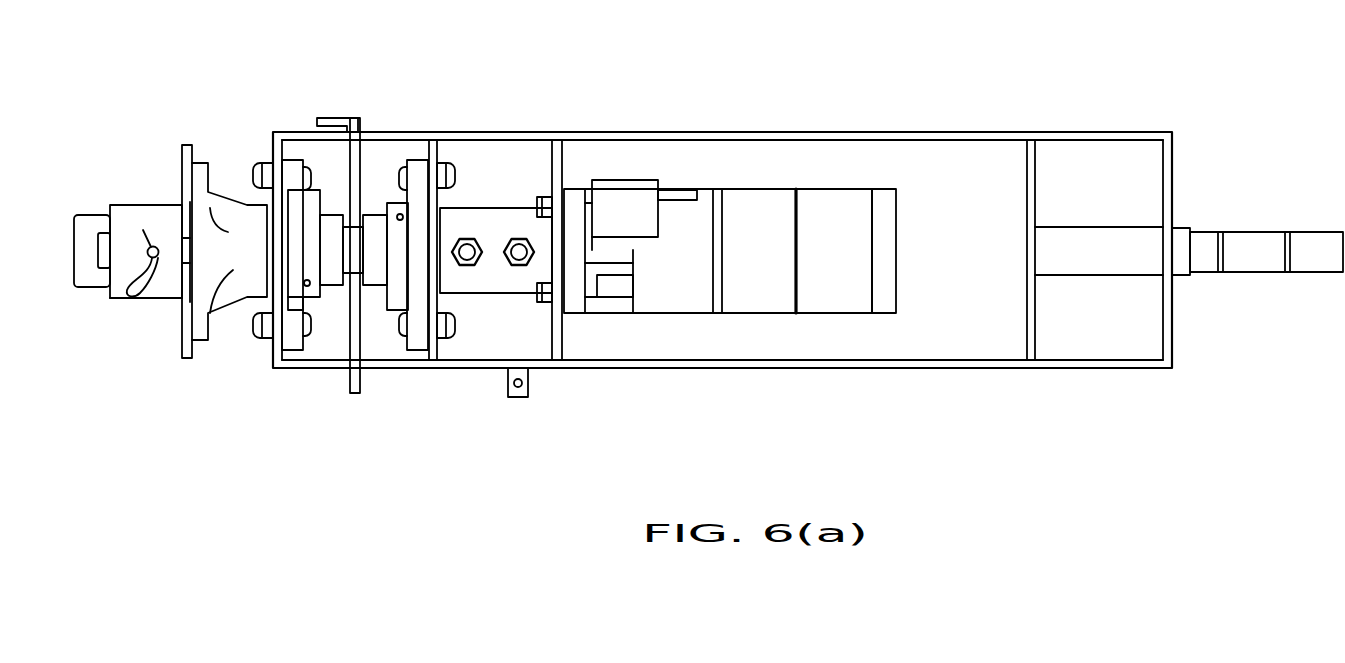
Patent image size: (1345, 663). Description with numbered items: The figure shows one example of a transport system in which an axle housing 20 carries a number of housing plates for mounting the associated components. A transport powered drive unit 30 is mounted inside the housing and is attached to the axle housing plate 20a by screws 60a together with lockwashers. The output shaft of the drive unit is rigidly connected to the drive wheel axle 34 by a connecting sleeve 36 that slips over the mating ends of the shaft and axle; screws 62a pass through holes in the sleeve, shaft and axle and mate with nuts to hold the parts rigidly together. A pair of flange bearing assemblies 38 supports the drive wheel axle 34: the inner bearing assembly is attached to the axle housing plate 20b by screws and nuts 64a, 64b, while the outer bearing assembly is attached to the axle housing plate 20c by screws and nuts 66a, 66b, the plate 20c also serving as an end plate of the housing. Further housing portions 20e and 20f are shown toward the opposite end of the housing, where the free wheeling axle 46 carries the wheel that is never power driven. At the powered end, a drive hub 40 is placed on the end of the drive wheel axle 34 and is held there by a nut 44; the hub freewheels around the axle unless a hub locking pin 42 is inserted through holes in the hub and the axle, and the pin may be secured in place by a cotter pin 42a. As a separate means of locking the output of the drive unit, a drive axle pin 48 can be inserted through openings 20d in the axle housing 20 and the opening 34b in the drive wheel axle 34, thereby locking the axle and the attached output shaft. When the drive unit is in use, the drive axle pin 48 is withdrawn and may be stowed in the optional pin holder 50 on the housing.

The axle housing 20 is at (733, 137).
The axle housing plate 20a is at (563, 150).
The axle housing plate 20b is at (432, 162).
The axle housing plate 20c is at (276, 350).
The openings 20d is at (355, 125).
The partition wall 20e is at (1023, 168).
The end wall 20f is at (1167, 170).
The transport powered drive unit 30 is at (753, 260).
The drive wheel axle 34 is at (362, 267).
The opening 34b is at (353, 253).
The connecting sleeve 36 is at (502, 222).
The flange bearing assemblies 38 is at (395, 237).
The drive hub 40 is at (191, 355).
The hub locking pin 42 is at (153, 222).
The cotter pin 42a is at (128, 300).
The nut 44 is at (80, 232).
The free wheeling axle 46 is at (1237, 243).
The drive axle pin 48 is at (323, 123).
The pin holder 50 is at (512, 395).
The screws 60a is at (538, 200).
The screws 62a is at (520, 258).
The screws 64a is at (403, 325).
The nuts 64b is at (447, 330).
The screws 66a is at (304, 165).
The nuts 66b is at (258, 168).